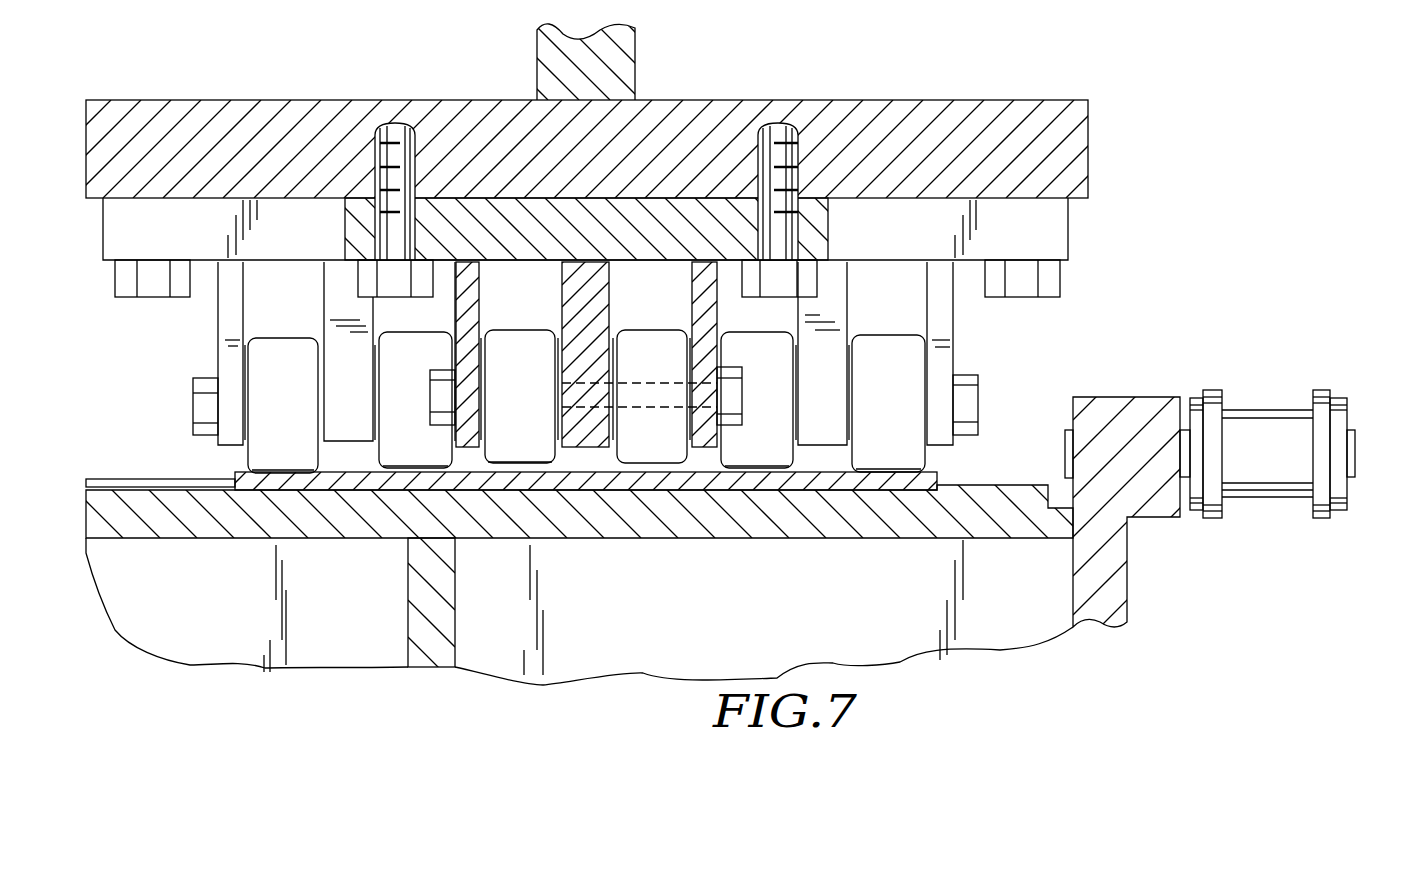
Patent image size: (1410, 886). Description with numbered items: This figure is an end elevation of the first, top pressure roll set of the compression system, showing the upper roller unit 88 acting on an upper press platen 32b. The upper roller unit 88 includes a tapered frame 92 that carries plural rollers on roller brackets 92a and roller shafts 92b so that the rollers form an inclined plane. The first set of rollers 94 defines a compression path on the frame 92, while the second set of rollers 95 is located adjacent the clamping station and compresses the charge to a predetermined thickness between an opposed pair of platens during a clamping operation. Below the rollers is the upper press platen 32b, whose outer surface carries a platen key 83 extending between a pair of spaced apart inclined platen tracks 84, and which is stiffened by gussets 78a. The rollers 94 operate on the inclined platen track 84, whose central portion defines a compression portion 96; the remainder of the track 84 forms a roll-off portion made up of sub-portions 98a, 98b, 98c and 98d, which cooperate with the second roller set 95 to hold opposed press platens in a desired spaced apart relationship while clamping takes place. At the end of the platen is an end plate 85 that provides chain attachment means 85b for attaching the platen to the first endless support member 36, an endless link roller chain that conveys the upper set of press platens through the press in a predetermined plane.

The tapered frame 92 is at (1088, 155).
The upper roller unit 88 is at (1090, 250).
The roller brackets 92a is at (335, 277).
The second set of rollers 95 is at (300, 415).
The first set of rollers 94 is at (537, 415).
The roller shafts 92b is at (637, 410).
The compression portion 96 is at (537, 455).
The roll-off sub-portion 98a is at (897, 455).
The roll-off sub-portion 98b is at (390, 455).
The roll-off sub-portion 98c is at (763, 455).
The roll-off sub-portion 98d is at (255, 460).
The inclined platen track 84 is at (710, 495).
The platen key 83 is at (175, 480).
The upper press platen 32b is at (765, 634).
The gussets 78a is at (514, 645).
The end plate 85 is at (1070, 573).
The first endless support member 36 is at (1268, 408).
The chain attachment means 85b is at (1409, 417).